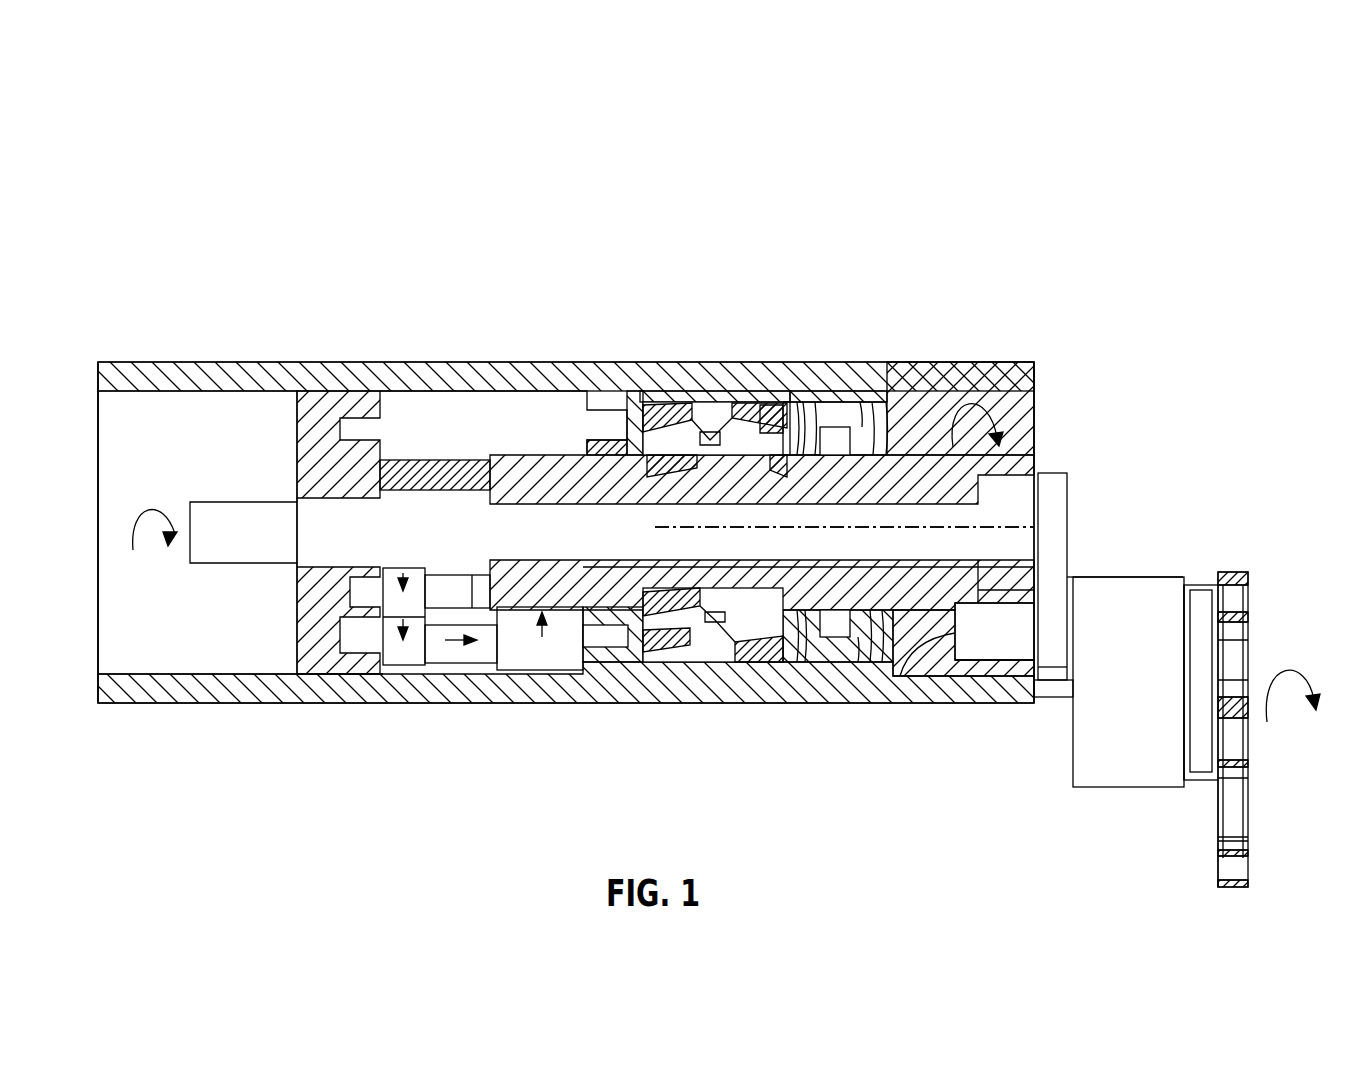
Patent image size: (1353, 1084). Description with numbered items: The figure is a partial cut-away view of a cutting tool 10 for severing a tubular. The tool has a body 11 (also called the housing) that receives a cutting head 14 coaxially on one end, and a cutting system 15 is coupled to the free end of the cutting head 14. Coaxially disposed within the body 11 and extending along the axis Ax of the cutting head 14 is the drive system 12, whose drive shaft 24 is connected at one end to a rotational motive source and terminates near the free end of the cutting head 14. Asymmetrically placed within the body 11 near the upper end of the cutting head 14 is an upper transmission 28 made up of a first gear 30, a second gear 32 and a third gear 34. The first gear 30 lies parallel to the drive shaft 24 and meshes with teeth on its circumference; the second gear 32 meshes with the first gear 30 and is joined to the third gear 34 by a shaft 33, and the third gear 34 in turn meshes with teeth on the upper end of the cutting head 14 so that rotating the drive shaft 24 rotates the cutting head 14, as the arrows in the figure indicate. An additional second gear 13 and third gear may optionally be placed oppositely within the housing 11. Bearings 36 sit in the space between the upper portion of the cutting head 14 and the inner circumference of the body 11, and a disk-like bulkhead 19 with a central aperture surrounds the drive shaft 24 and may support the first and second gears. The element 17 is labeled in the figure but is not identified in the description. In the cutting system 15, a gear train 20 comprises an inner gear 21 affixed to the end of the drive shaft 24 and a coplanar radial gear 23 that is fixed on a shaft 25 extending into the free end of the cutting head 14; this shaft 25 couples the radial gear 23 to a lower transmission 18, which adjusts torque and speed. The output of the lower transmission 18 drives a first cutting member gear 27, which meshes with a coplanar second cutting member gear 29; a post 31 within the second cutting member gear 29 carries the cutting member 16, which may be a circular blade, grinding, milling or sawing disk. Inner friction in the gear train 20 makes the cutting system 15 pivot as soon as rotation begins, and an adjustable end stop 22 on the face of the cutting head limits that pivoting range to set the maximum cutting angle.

The cutting tool 10 is at (474, 276).
The body 11 is at (378, 390).
The drive system 12 is at (210, 398).
The additional second gear 13 is at (449, 413).
The cutting head 14 is at (968, 388).
The cutting system 15 is at (1119, 810).
The cutting member 16 is at (1238, 570).
The threaded portion 17 is at (486, 458).
The lower transmission 18 is at (1142, 542).
The bulkhead 19 is at (323, 396).
The gear train 20 is at (1057, 470).
The inner gear 21 is at (1103, 515).
The end stop 22 is at (1050, 700).
The radial gear 23 is at (1013, 700).
The drive shaft 24 is at (221, 547).
The shaft 25 is at (897, 664).
The first cutting member gear 27 is at (1201, 596).
The upper transmission 28 is at (318, 682).
The second cutting member gear 29 is at (1202, 768).
The first gear 30 is at (425, 572).
The post 31 is at (1217, 802).
The second gear 32 is at (407, 668).
The shaft 33 is at (472, 664).
The third gear 34 is at (567, 672).
The bearings 36 is at (720, 398).
The axis Ax is at (903, 500).